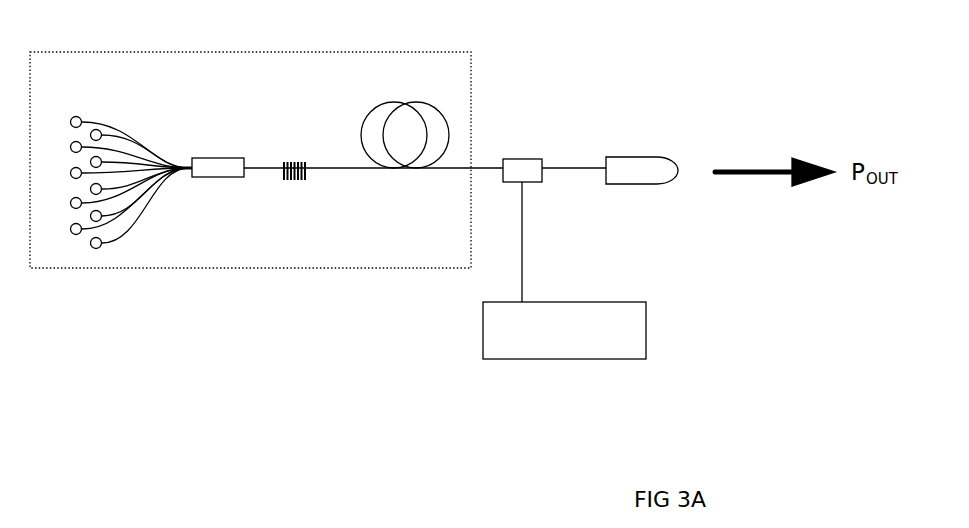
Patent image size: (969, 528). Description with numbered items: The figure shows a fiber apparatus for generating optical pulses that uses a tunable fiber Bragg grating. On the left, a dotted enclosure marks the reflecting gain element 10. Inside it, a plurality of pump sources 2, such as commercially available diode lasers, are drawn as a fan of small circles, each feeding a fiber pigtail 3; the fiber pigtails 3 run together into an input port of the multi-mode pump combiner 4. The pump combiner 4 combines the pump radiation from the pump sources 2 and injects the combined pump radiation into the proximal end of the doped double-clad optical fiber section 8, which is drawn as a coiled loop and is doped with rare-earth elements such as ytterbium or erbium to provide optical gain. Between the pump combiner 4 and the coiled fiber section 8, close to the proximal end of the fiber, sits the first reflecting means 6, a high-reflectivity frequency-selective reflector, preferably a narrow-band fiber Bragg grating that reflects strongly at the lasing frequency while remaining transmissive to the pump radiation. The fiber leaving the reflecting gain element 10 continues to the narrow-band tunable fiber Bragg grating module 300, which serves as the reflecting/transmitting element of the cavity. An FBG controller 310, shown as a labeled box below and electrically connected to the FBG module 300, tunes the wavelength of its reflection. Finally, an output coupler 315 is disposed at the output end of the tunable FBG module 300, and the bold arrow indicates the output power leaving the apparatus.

The reflecting gain element 10 is at (126, 50).
The pump sources 2 is at (74, 235).
The fiber pigtails 3 is at (106, 230).
The multi-mode pump combiner 4 is at (203, 155).
The first reflecting means 6 is at (300, 186).
The double-clad optical fiber section 8 is at (403, 174).
The tunable fiber Bragg grating module 300 is at (522, 152).
The output coupler 315 is at (639, 152).
The FBG controller 310 is at (612, 369).